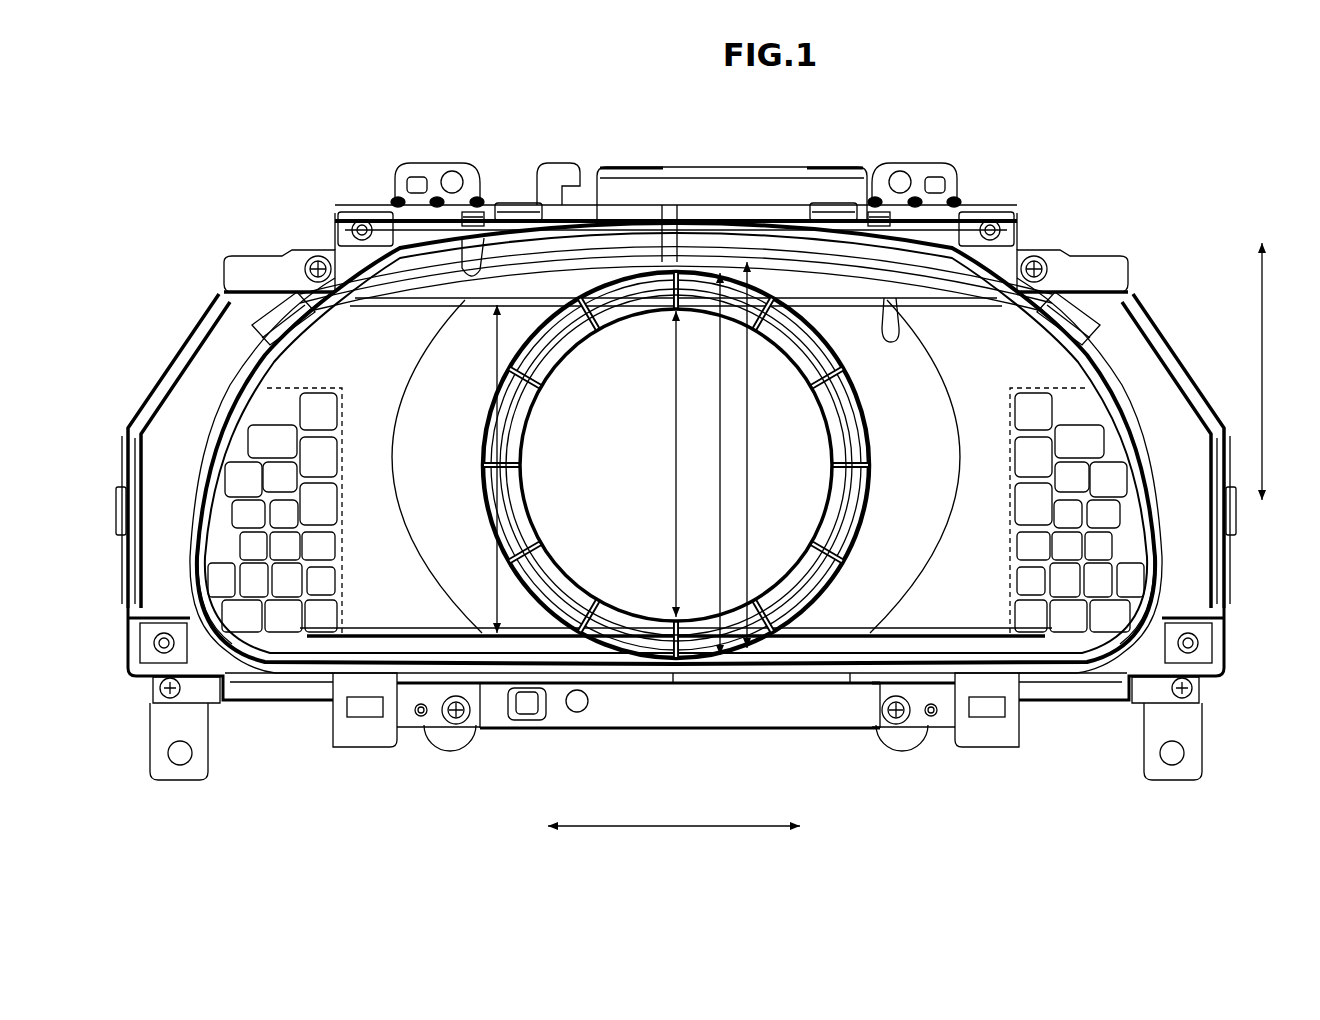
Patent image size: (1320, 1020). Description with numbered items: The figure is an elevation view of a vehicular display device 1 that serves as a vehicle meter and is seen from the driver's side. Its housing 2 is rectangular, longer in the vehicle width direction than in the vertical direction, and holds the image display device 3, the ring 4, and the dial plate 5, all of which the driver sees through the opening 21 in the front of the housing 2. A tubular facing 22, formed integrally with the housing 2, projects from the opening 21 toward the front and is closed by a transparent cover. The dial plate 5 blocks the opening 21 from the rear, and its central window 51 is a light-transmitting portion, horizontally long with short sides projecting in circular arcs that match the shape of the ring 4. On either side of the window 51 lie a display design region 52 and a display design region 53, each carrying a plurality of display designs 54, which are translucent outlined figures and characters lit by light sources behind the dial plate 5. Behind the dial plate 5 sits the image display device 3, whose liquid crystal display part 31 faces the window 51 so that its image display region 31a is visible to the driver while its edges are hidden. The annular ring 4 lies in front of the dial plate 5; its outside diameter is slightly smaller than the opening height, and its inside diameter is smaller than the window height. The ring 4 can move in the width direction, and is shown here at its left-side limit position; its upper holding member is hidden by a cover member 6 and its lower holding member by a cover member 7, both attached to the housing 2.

The vehicular display device 1 is at (342, 92).
The housing 2 is at (362, 205).
The opening 21 is at (456, 245).
The cover member 6 is at (527, 258).
The ring 4 is at (620, 270).
The facing 22 is at (669, 172).
The image display device 3 is at (676, 376).
The liquid crystal display part 31 is at (803, 308).
The image display region 31a is at (823, 318).
The window 51 is at (888, 330).
The dial plate 5 is at (987, 320).
The display designs 54 is at (242, 458).
The display design region 52 is at (341, 388).
The display design region 53 is at (1011, 388).
The cover member 7 is at (558, 645).